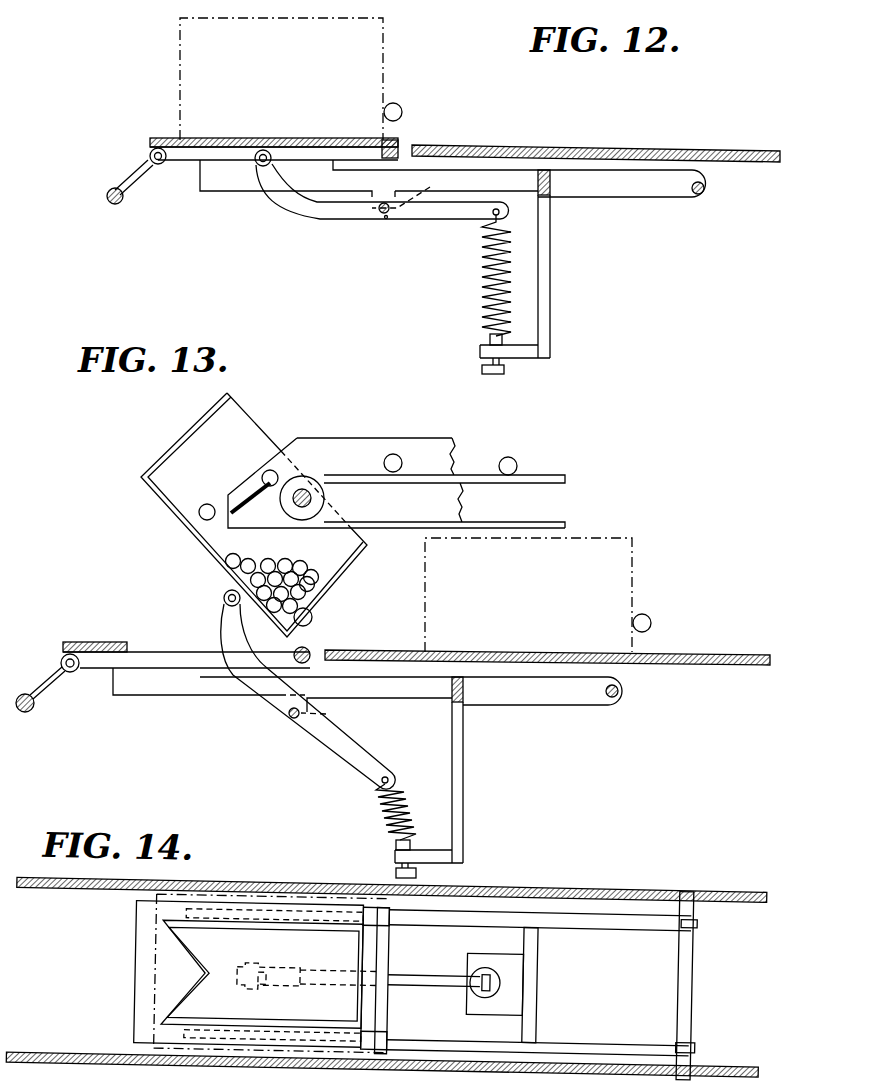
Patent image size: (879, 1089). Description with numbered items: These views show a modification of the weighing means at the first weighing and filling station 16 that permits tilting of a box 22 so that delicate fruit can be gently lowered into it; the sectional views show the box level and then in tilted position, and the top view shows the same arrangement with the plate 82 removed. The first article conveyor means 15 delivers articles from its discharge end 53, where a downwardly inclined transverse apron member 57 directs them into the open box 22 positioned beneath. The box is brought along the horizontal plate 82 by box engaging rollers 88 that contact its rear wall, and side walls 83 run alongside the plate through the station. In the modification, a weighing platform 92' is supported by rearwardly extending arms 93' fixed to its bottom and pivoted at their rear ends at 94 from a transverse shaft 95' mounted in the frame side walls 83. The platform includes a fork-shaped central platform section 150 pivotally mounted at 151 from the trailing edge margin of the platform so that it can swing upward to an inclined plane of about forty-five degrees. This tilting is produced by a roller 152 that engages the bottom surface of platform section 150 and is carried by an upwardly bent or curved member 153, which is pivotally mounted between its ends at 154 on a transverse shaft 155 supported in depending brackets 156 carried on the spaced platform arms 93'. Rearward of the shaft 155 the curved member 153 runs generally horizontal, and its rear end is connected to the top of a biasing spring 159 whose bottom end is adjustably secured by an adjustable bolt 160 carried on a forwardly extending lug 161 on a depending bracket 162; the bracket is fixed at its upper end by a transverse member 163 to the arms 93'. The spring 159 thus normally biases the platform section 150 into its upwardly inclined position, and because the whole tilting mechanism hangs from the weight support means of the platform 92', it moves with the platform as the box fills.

In FIG. 12, the box 22 is at (393, 31).
In FIG. 13, the box 22 is at (241, 415).
In FIG. 12, the box engaging rollers 88 is at (399, 103).
In FIG. 13, the box engaging rollers 88 is at (316, 610).
In FIG. 12, the first weighing and filling station 16 is at (437, 99).
In FIG. 13, the first weighing and filling station 16 is at (130, 572).
In FIG. 13, the first article conveyor means 15 is at (505, 446).
In FIG. 13, the discharge end 53 is at (547, 476).
In FIG. 13, the transverse apron member 57 is at (262, 487).
In FIG. 12, the central platform section 150 is at (318, 138).
In FIG. 13, the central platform section 150 is at (222, 578).
In FIG. 14, the central platform section 150 is at (269, 974).
In FIG. 12, the pivotal mounting 151 is at (398, 148).
In FIG. 13, the pivotal mounting 151 is at (311, 655).
In FIG. 14, the pivotal mounting 151 is at (389, 950).
In FIG. 12, the plate 82 is at (668, 151).
In FIG. 13, the plate 82 is at (714, 660).
In FIG. 14, the side walls 83 is at (729, 887).
In FIG. 12, the weighing platform 92' is at (152, 182).
In FIG. 13, the weighing platform 92' is at (61, 687).
In FIG. 14, the weighing platform 92' is at (243, 973).
In FIG. 12, the rearwardly extending arms 93' is at (453, 194).
In FIG. 13, the rearwardly extending arms 93' is at (461, 705).
In FIG. 14, the rearwardly extending arms 93' is at (540, 955).
In FIG. 12, the pivot 94 is at (698, 201).
In FIG. 14, the pivot 94 is at (696, 915).
In FIG. 12, the transverse shaft 95' is at (726, 181).
In FIG. 14, the transverse shaft 95' is at (714, 986).
In FIG. 12, the roller 152 is at (256, 170).
In FIG. 13, the roller 152 is at (224, 598).
In FIG. 12, the curved member 153 is at (293, 207).
In FIG. 13, the curved member 153 is at (218, 682).
In FIG. 12, the pivotal mounting 154 is at (418, 189).
In FIG. 13, the pivotal mounting 154 is at (332, 715).
In FIG. 12, the transverse shaft 155 is at (387, 220).
In FIG. 13, the transverse shaft 155 is at (297, 722).
In FIG. 13, the depending brackets 156 is at (290, 717).
In FIG. 12, the biasing spring 159 is at (464, 275).
In FIG. 13, the biasing spring 159 is at (382, 817).
In FIG. 14, the biasing spring 159 is at (502, 983).
In FIG. 12, the adjustable bolt 160 is at (490, 376).
In FIG. 13, the adjustable bolt 160 is at (417, 875).
In FIG. 12, the forwardly extending lug 161 is at (535, 352).
In FIG. 13, the forwardly extending lug 161 is at (432, 853).
In FIG. 14, the forwardly extending lug 161 is at (518, 1001).
In FIG. 12, the depending bracket 162 is at (550, 301).
In FIG. 13, the depending bracket 162 is at (464, 782).
In FIG. 12, the transverse member 163 is at (549, 190).
In FIG. 13, the transverse member 163 is at (450, 694).
In FIG. 14, the transverse member 163 is at (536, 948).